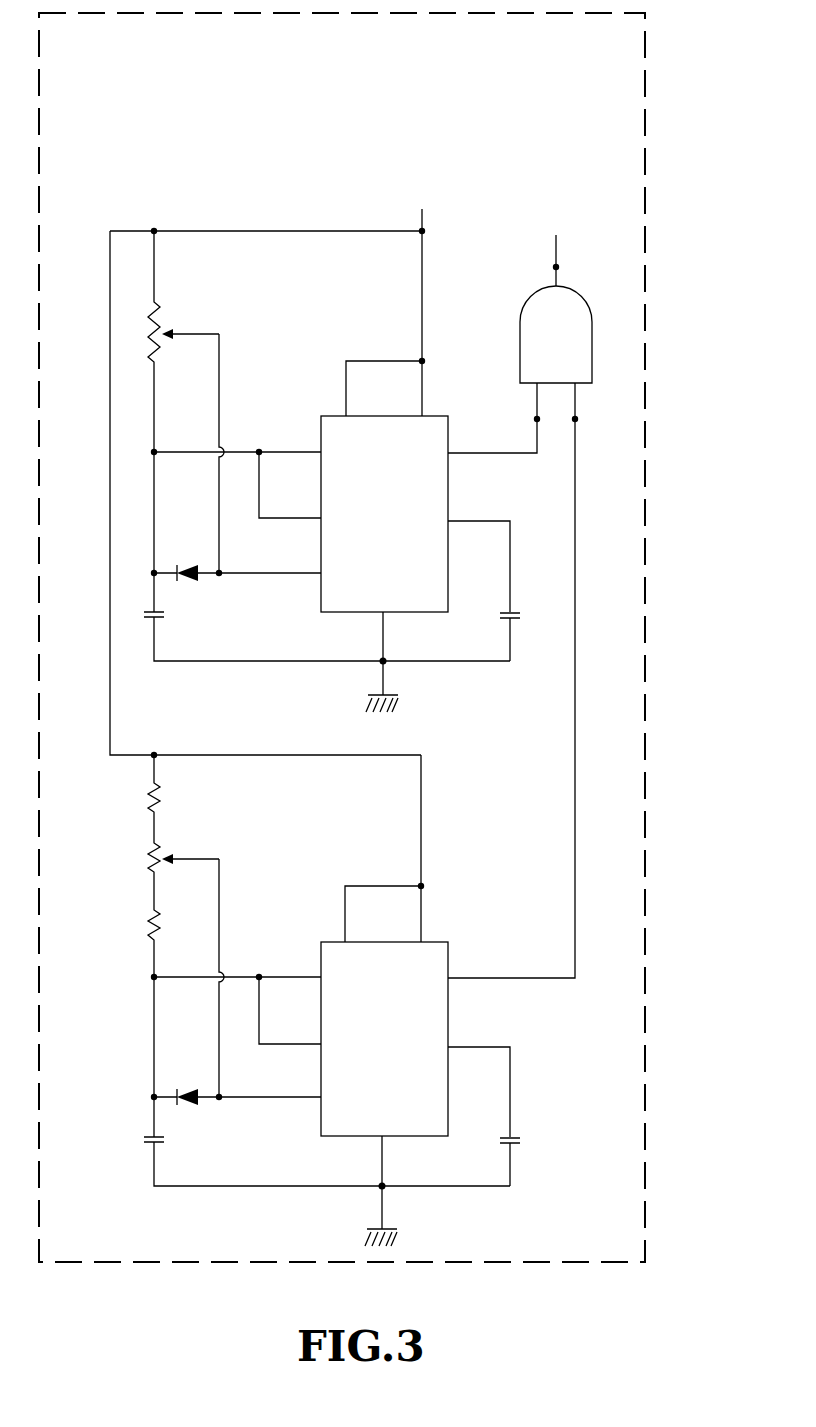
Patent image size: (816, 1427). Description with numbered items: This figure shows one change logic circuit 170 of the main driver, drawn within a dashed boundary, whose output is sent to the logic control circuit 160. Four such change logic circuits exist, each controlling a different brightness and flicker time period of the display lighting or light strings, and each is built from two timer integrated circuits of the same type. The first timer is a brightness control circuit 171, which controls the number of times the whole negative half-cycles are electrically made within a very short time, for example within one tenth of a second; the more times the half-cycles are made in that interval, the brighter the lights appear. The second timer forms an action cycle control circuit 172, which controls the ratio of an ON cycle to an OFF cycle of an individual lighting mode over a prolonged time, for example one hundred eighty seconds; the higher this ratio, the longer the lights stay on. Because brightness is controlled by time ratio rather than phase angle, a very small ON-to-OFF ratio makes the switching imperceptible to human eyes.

The change logic circuit 170 is at (650, 200).
The brightness control circuit 171 is at (318, 410).
The action cycle control circuit 172 is at (318, 936).
The logic control circuit 160 is at (556, 124).